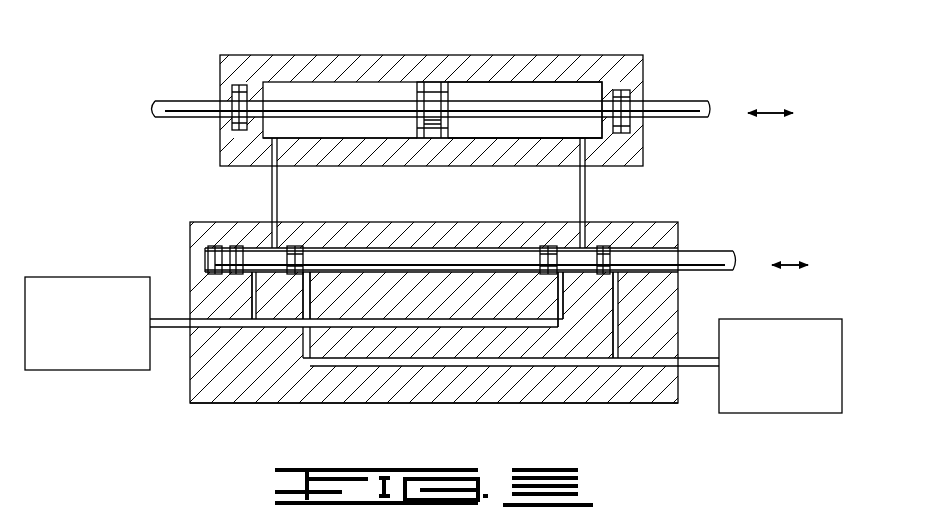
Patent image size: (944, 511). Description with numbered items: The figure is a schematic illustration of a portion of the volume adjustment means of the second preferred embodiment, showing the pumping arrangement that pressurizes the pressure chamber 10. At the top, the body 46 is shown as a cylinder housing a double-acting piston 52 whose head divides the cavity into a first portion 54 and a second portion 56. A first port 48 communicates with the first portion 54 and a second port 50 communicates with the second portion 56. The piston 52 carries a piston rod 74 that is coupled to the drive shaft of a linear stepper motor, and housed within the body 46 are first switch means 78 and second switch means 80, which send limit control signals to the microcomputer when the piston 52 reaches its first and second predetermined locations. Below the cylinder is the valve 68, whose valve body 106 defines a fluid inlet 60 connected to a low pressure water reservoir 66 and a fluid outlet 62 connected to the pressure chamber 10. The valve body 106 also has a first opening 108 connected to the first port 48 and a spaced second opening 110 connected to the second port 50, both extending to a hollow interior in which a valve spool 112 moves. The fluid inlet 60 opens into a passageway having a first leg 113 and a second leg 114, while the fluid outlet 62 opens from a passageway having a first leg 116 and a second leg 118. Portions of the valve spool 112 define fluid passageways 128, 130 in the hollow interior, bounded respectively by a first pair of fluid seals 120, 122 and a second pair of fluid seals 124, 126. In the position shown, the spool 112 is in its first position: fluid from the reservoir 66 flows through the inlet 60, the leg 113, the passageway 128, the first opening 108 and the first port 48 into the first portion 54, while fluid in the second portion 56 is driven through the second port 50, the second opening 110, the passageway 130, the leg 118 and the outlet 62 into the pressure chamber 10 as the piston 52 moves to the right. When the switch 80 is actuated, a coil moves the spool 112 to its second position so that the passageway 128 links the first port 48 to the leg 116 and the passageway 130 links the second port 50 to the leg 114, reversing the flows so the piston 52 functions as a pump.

The pressure chamber 10 is at (783, 319).
The body 46 is at (353, 35).
The first port 48 is at (286, 169).
The second port 50 is at (572, 175).
The double-acting piston 52 is at (417, 82).
The first portion 54 is at (298, 87).
The second portion 56 is at (503, 82).
The fluid inlet 60 is at (181, 314).
The fluid outlet 62 is at (688, 352).
The low pressure water reservoir 66 is at (78, 277).
The valve 68 is at (414, 411).
The piston rod 74 is at (178, 100).
The first switch means 78 is at (230, 119).
The second switch means 80 is at (647, 84).
The valve body 106 is at (462, 393).
The first opening 108 is at (268, 209).
The second opening 110 is at (591, 212).
The valve spool 112 is at (698, 260).
The first leg 113 is at (250, 296).
The second leg 114 is at (620, 290).
The first leg 116 is at (306, 276).
The second leg 118 is at (552, 285).
The fluid seal 120 is at (242, 236).
The fluid seal 122 is at (306, 233).
The fluid seal 124 is at (548, 243).
The fluid seal 126 is at (608, 242).
The fluid passageway 128 is at (268, 276).
The fluid passageway 130 is at (576, 287).